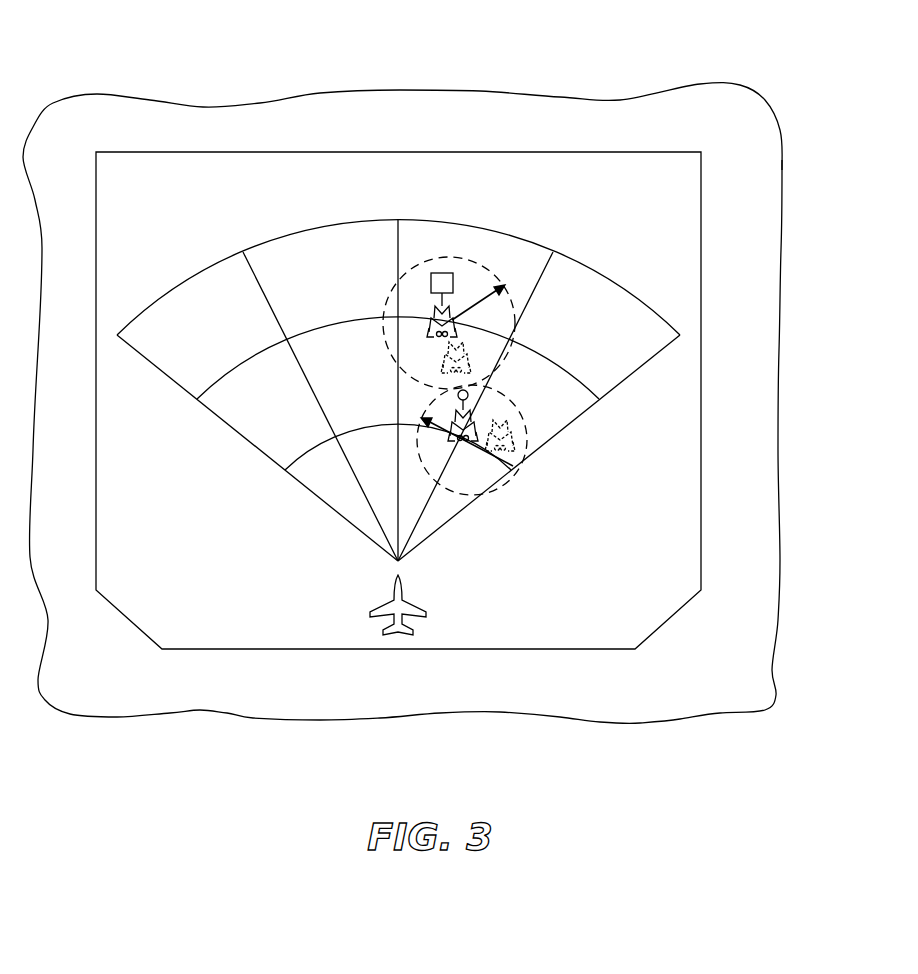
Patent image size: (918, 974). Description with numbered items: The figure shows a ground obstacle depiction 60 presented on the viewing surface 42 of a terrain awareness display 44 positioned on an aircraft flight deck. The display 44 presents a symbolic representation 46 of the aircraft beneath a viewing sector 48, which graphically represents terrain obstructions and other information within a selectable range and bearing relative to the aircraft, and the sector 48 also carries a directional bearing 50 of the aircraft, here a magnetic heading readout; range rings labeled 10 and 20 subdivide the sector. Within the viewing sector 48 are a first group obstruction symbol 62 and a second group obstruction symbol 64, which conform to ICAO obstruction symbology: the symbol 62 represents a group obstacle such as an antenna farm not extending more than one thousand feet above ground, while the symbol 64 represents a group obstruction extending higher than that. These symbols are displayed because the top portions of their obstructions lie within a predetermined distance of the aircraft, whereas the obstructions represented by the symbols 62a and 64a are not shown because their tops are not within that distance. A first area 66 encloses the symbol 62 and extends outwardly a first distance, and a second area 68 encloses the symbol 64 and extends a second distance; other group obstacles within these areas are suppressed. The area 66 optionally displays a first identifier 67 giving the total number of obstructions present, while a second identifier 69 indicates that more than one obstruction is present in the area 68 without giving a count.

The ground obstacle depiction 60 is at (771, 66).
The terrain awareness display 44 is at (783, 152).
The viewing surface 42 is at (619, 221).
The directional bearing 50 is at (325, 196).
The viewing sector 48 is at (596, 434).
The outer range ring 20 is at (397, 370).
The inner range ring 10 is at (398, 458).
The first area 66 is at (383, 293).
The first identifier 67 is at (452, 273).
The first group obstruction symbol 62 is at (426, 333).
The group obstruction symbol 62a is at (437, 372).
The second area 68 is at (470, 488).
The second identifier 69 is at (470, 394).
The second group obstruction symbol 64 is at (485, 412).
The group obstruction symbol 64a is at (519, 423).
The symbolic representation of the aircraft 46 is at (416, 598).